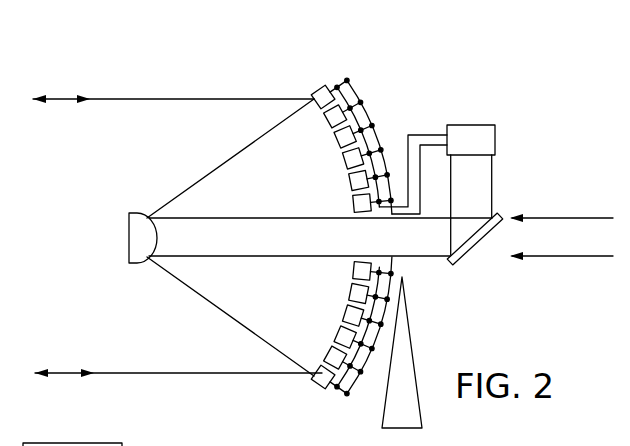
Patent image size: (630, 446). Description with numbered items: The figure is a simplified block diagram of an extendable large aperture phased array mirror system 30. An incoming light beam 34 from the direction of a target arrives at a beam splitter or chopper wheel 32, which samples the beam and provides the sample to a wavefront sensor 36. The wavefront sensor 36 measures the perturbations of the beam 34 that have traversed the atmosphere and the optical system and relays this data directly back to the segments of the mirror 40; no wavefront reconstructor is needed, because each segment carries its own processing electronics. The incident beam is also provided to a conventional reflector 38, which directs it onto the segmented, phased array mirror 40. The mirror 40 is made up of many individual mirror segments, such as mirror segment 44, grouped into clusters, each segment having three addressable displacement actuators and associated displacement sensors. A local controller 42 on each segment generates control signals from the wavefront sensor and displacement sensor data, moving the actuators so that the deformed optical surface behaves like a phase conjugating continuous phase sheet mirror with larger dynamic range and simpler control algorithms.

The system 30 is at (528, 74).
The beam splitter or chopper wheel 32 is at (475, 247).
The beam 34 is at (242, 217).
The wavefront sensor 36 is at (477, 125).
The conventional reflector 38 is at (128, 225).
The mirror 40 is at (308, 81).
The local controller 42 is at (337, 85).
The mirror segment 44 is at (164, 435).